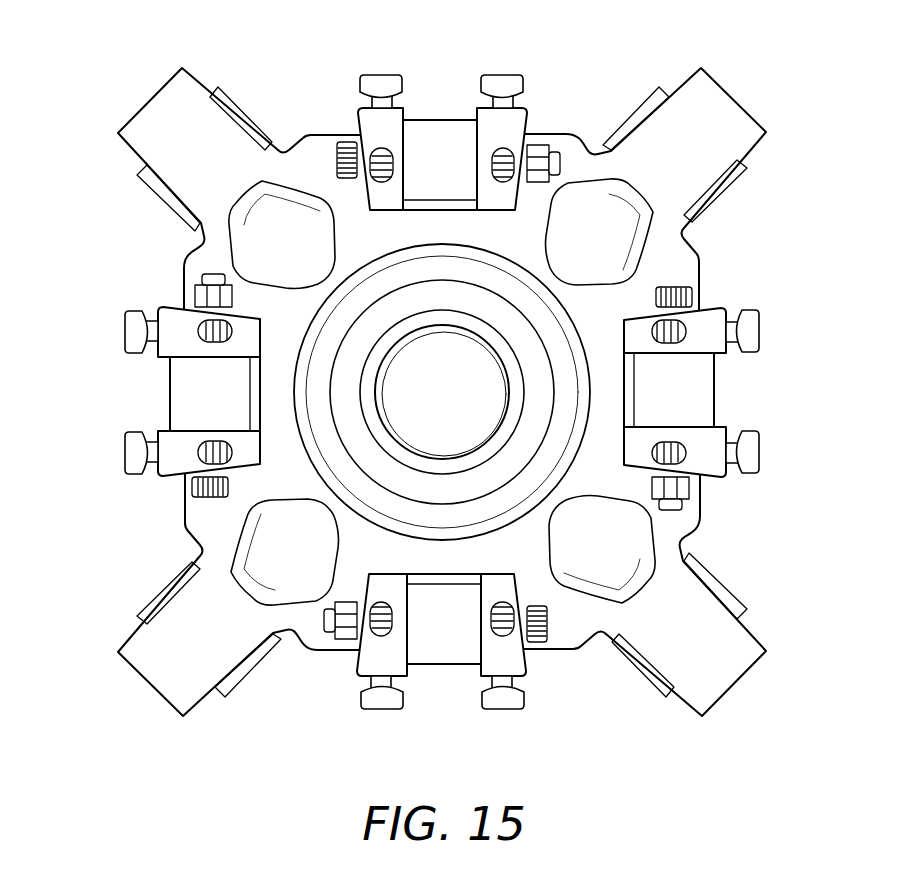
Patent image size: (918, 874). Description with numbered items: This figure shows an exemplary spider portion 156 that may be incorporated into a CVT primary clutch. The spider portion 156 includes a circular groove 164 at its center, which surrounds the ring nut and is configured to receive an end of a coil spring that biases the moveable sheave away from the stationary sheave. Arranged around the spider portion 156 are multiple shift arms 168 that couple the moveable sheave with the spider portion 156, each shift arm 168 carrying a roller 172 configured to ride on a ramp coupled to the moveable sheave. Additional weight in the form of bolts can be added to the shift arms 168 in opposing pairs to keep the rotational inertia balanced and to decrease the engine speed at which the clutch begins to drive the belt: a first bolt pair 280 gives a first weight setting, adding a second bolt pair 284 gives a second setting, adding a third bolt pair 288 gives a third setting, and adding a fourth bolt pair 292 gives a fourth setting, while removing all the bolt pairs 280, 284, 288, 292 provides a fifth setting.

The spider portion 156 is at (153, 108).
The circular groove 164 is at (548, 453).
The shift arm 168 is at (370, 128).
The roller 172 is at (452, 128).
The first bolt pair 280 is at (502, 77).
The second bolt pair 284 is at (382, 77).
The third bolt pair 288 is at (753, 332).
The fourth bolt pair 292 is at (753, 453).